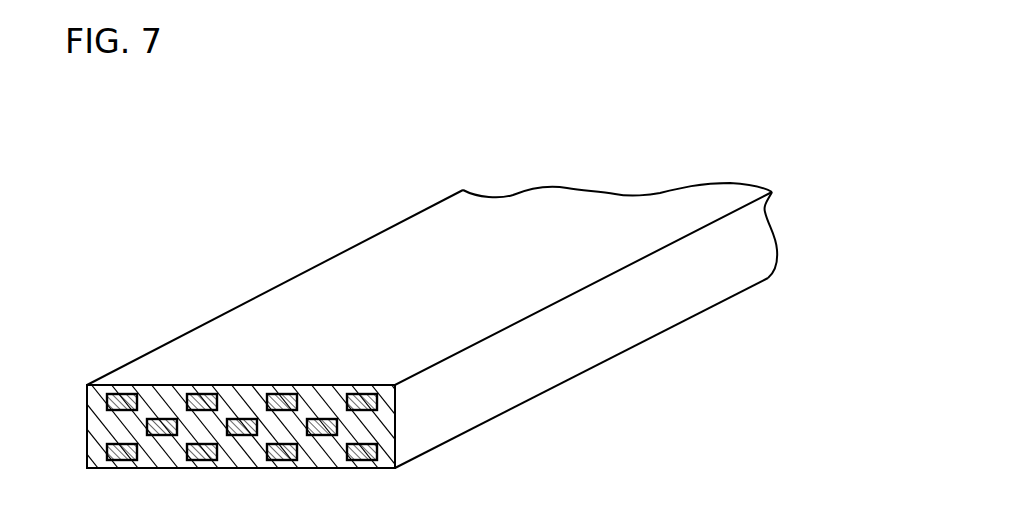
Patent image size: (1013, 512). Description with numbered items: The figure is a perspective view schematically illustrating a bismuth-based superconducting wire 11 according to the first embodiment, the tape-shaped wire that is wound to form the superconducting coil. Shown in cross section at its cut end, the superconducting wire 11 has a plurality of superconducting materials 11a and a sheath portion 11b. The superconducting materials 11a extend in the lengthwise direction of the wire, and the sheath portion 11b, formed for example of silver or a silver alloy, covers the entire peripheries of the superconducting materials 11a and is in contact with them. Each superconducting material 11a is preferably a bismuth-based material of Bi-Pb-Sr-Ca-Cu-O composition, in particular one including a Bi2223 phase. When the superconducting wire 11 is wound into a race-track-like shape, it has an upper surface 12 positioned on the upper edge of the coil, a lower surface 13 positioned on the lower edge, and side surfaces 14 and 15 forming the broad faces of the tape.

The superconducting wire 11 is at (402, 273).
The superconducting material 11a is at (110, 405).
The sheath portion 11b is at (115, 433).
The upper surface 12 is at (600, 332).
The lower surface 13 is at (245, 302).
The side surface 14 is at (327, 283).
The side surface 15 is at (528, 400).